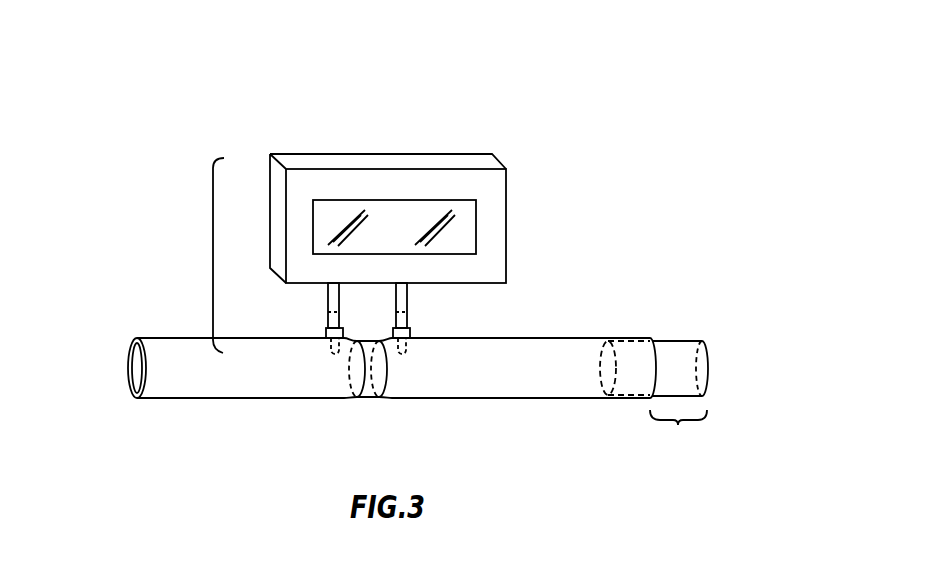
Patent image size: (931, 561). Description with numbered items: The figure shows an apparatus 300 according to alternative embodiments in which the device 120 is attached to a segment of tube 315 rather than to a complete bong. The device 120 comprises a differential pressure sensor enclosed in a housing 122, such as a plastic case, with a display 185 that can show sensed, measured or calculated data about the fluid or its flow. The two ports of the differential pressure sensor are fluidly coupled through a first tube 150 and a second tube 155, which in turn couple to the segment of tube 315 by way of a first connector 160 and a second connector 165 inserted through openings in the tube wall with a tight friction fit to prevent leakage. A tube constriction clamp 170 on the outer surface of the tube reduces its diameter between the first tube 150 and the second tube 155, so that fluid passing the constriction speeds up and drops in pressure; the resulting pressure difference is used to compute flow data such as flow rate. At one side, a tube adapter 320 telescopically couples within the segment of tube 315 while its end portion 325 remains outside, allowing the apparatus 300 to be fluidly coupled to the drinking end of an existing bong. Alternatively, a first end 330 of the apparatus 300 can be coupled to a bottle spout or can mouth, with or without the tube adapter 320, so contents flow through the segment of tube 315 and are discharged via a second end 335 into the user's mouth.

The apparatus 300 is at (615, 95).
The device 120 is at (213, 255).
The housing 122 is at (423, 155).
The display 185 is at (328, 200).
The first tube 150 is at (328, 293).
The second tube 155 is at (407, 293).
The first connector 160 is at (326, 331).
The second connector 165 is at (410, 333).
The tube constriction clamp 170 is at (365, 398).
The second end 335 is at (120, 342).
The segment of tube 315 is at (568, 338).
The first end 330 is at (660, 330).
The tube adapter 320 is at (683, 340).
The end portion 325 is at (678, 425).